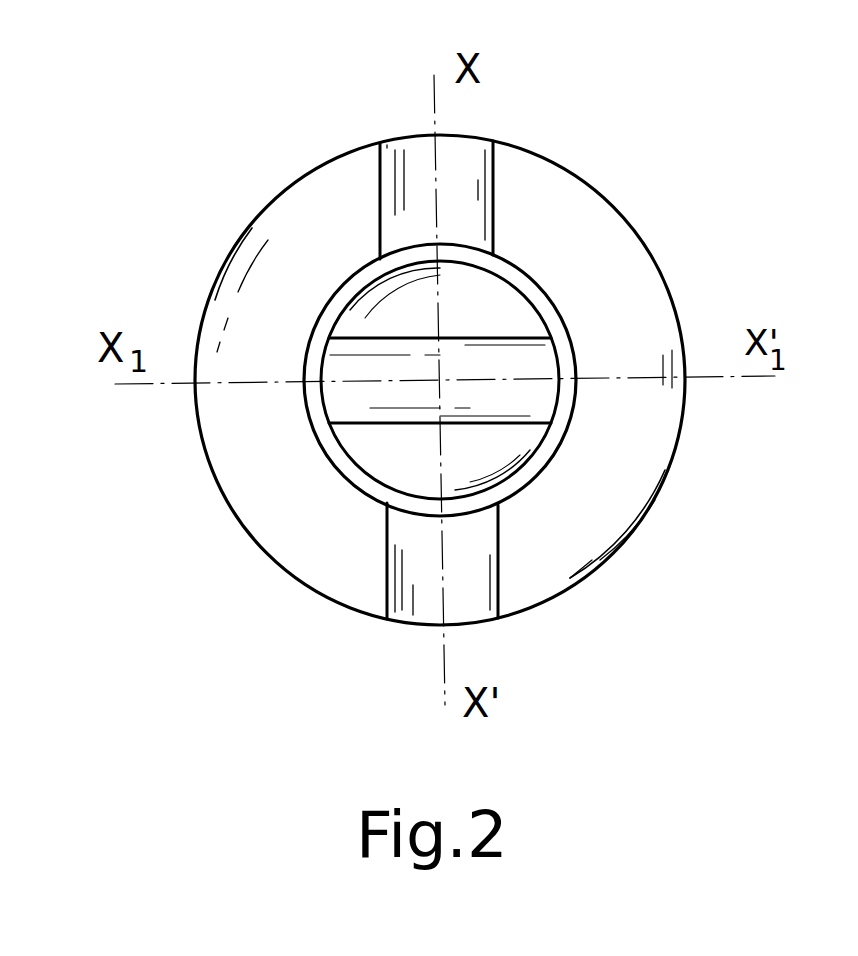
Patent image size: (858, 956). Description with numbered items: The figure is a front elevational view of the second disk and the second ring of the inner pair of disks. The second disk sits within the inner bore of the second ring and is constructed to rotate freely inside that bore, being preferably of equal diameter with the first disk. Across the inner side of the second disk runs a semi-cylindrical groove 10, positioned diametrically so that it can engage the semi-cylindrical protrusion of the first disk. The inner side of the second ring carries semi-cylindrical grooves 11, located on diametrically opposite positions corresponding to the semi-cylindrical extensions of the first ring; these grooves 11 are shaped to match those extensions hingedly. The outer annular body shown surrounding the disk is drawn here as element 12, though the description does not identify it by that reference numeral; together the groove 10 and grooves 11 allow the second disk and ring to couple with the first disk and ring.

The semi-cylindrical groove 10 is at (513, 358).
The semi-cylindrical grooves 11 is at (478, 150).
The outer annular body 12 is at (440, 380).